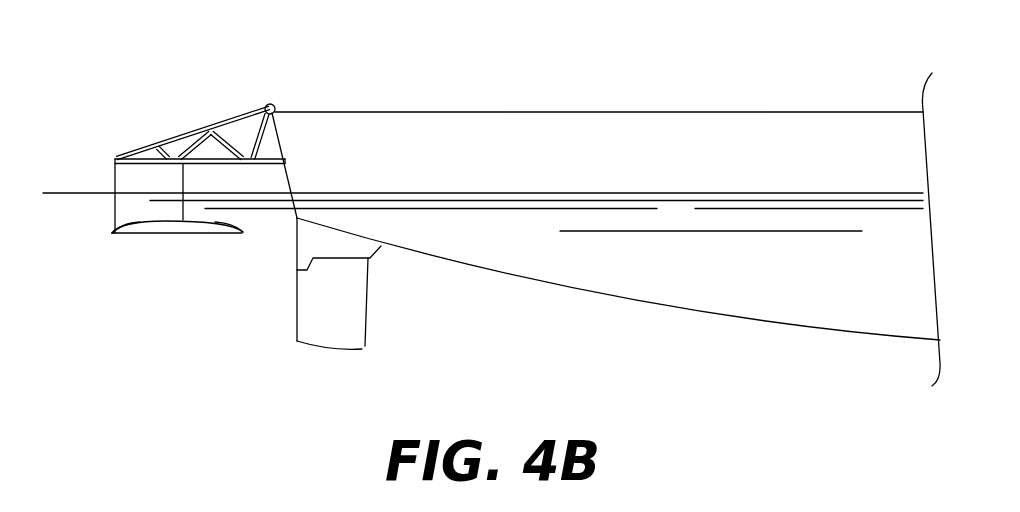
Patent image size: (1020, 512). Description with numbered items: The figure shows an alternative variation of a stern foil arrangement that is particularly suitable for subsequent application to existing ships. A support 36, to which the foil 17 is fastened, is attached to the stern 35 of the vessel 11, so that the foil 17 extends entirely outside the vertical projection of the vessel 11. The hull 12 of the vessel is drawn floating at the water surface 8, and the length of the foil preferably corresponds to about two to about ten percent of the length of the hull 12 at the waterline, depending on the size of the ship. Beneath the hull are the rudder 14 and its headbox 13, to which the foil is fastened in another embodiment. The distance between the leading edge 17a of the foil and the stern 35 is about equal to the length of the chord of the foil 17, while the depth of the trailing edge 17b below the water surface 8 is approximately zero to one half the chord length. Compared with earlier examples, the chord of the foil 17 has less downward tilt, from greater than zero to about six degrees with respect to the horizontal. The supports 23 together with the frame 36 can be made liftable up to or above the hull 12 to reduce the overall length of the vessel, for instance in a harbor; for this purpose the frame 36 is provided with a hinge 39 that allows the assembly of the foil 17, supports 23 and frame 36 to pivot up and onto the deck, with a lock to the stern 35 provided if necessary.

The water surface 8 is at (453, 193).
The vessel 11 is at (444, 74).
The hull 12 is at (673, 128).
The headbox 13 is at (308, 240).
The rudder 14 is at (345, 338).
The foil 17 is at (167, 228).
The leading edge 17a is at (241, 233).
The trailing edge 17b is at (113, 236).
The supports 23 is at (143, 180).
The stern 35 is at (280, 141).
The support 36 is at (190, 149).
The hinge 39 is at (268, 103).